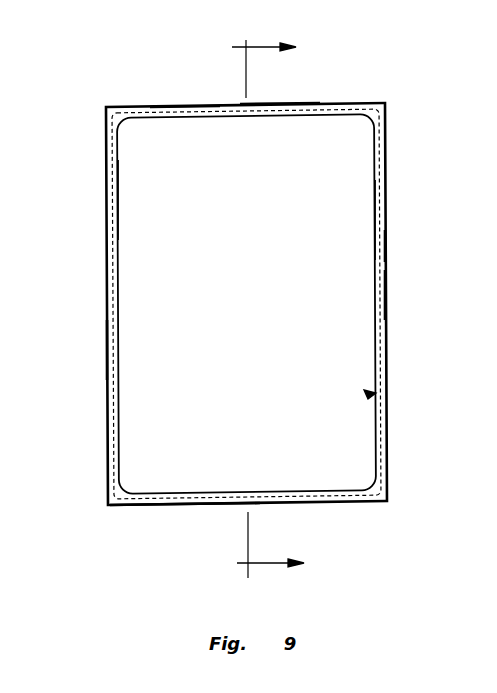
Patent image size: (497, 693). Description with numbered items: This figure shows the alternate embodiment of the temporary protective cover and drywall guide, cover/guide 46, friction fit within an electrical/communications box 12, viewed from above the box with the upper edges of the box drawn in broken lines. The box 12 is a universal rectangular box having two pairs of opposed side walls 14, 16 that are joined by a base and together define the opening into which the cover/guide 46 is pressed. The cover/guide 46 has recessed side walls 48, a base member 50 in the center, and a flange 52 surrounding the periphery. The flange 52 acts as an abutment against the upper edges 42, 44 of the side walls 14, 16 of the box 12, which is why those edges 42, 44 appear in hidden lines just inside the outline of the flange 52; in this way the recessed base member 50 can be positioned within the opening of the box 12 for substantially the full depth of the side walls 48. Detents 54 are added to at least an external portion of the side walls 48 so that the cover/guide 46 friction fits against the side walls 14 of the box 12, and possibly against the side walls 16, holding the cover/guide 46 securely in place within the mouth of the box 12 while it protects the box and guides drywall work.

The electrical/communications box 12 is at (410, 254).
The side walls 14 is at (110, 353).
The side walls 16 is at (280, 112).
The upper edges 42 is at (110, 273).
The upper edges 44 is at (178, 108).
The cover/guide 46 is at (336, 94).
The recessed side walls 48 is at (118, 329).
The base member 50 is at (268, 290).
The flange 52 is at (121, 229).
The detents 54 is at (110, 197).